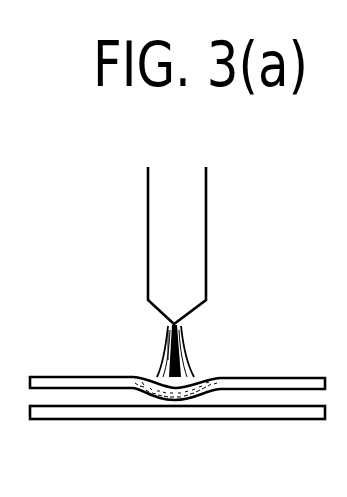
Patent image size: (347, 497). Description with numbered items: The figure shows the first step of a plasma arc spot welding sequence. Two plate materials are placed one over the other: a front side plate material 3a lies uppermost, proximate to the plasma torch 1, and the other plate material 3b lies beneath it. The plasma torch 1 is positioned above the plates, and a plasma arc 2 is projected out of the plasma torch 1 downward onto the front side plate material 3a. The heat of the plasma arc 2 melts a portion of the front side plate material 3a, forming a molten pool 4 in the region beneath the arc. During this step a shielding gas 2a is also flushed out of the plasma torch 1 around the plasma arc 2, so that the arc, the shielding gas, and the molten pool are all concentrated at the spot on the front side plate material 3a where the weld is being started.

The plasma torch 1 is at (196, 226).
The plasma arc 2 is at (185, 358).
The shielding gas 2a is at (168, 347).
The front side plate material 3a is at (264, 386).
The rear side plate material 3b is at (258, 413).
The molten pool 4 is at (146, 382).